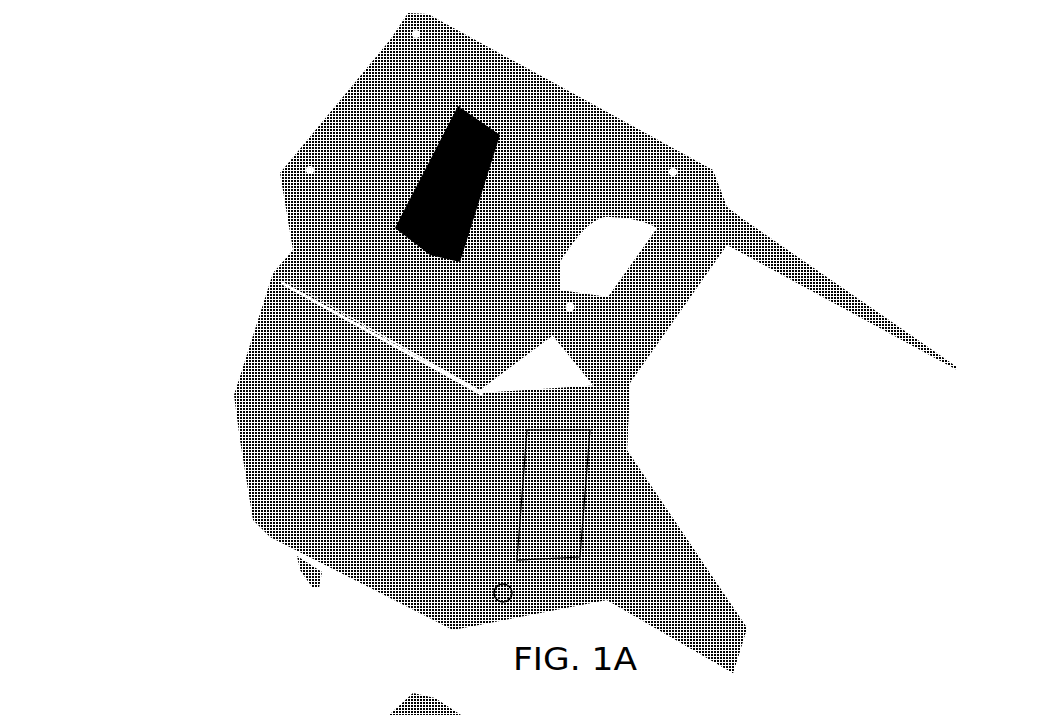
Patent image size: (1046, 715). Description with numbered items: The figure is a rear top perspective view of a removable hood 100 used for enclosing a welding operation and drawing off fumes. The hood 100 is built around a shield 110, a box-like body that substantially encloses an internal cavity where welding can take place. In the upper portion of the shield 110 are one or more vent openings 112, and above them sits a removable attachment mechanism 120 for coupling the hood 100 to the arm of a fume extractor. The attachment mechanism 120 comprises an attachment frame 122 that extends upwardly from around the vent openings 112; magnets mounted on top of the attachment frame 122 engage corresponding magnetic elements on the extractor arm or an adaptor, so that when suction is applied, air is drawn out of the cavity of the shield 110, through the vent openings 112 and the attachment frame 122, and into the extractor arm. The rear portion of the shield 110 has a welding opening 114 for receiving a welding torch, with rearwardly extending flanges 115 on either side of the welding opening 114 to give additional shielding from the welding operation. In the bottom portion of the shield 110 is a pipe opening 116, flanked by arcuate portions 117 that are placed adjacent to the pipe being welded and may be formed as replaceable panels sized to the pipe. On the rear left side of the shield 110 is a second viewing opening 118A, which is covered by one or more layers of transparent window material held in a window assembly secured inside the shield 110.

The removable hood 100 is at (500, 357).
The shield 110 is at (342, 400).
The vent openings 112 is at (536, 176).
The welding opening 114 is at (754, 482).
The rearwardly extending flanges 115 is at (833, 283).
The pipe opening 116 is at (386, 636).
The arcuate portions 117 is at (293, 558).
The second viewing opening 118A is at (588, 458).
The removable attachment mechanism 120 is at (328, 65).
The attachment frame 122 is at (690, 212).